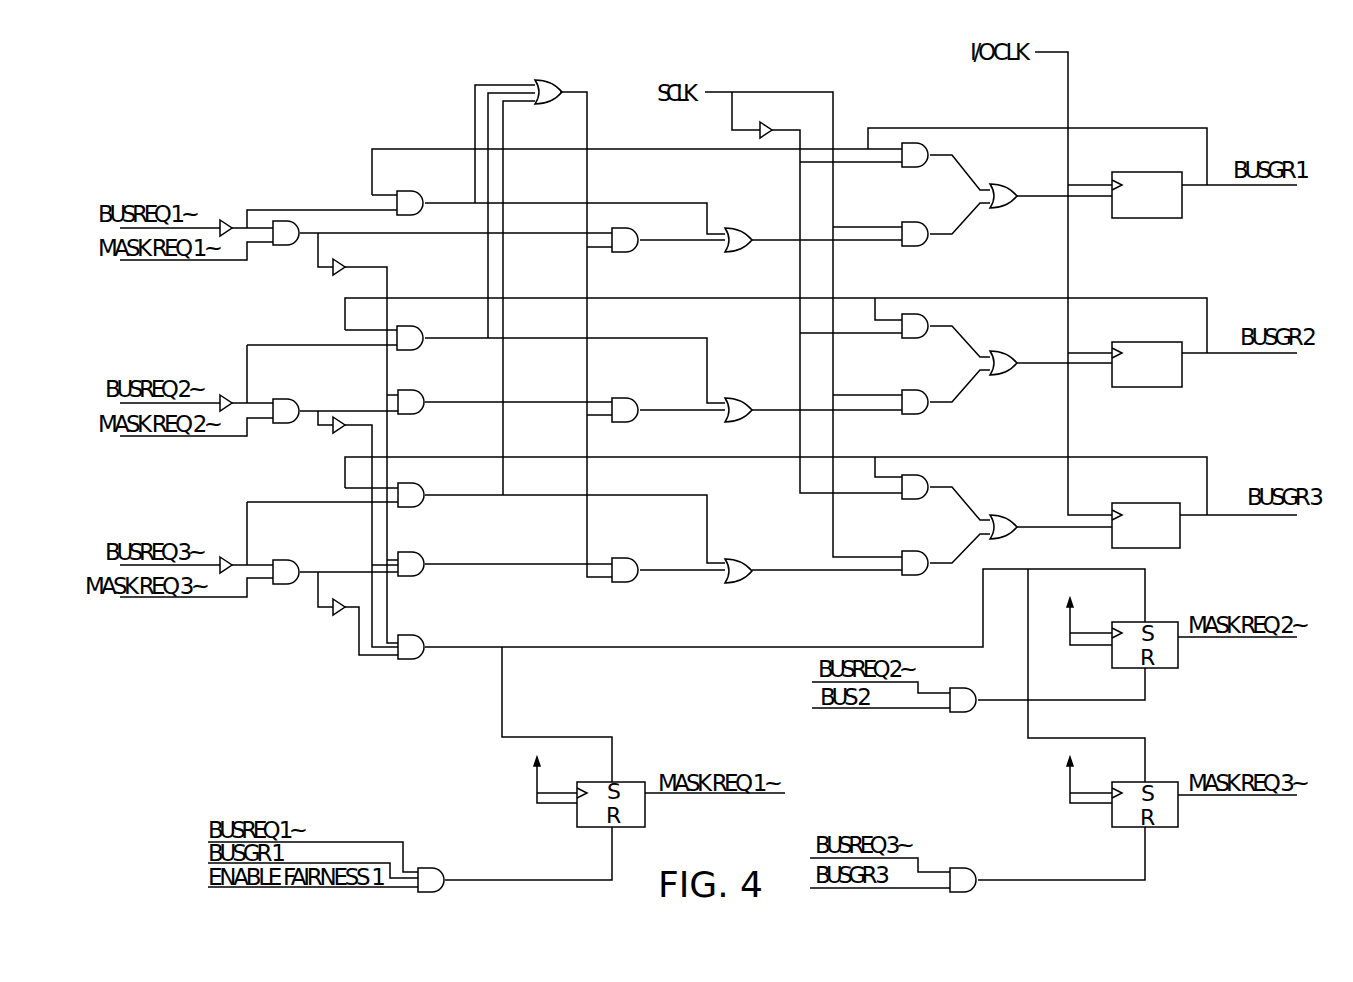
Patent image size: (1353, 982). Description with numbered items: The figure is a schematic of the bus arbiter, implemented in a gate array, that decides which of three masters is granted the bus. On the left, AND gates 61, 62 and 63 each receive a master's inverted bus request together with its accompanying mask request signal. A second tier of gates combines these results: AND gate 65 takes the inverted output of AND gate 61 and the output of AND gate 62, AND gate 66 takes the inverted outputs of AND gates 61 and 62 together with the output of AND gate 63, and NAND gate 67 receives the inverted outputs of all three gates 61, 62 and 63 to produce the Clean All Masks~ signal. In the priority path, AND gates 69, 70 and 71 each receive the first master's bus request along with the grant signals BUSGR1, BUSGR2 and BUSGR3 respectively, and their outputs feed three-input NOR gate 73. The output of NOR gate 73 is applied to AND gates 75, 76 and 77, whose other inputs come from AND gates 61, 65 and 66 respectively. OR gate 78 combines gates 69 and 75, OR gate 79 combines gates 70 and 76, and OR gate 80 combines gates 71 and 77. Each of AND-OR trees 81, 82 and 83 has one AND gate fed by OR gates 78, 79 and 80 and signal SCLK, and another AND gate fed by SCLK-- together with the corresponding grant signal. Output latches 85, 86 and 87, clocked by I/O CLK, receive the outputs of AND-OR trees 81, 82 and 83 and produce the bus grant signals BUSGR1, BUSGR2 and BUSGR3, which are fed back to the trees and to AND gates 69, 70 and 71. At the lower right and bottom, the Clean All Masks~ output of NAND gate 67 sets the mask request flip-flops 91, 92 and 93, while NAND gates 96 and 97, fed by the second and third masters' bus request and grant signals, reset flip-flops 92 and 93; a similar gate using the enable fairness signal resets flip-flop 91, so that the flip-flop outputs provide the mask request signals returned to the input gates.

The AND gate 61 is at (286, 247).
The AND gate 62 is at (286, 396).
The AND gate 63 is at (286, 560).
The AND gate 65 is at (411, 417).
The AND gate 66 is at (411, 579).
The NAND gate 67 is at (411, 663).
The AND gate 69 is at (410, 189).
The AND gate 70 is at (410, 326).
The AND gate 71 is at (411, 508).
The NOR gate 73 is at (557, 79).
The AND gate 75 is at (625, 255).
The AND gate 76 is at (625, 396).
The AND gate 77 is at (625, 556).
The OR gate 78 is at (738, 255).
The OR gate 79 is at (738, 396).
The OR gate 80 is at (738, 557).
The AND-OR tree 81 is at (959, 194).
The AND-OR tree 82 is at (959, 364).
The AND-OR tree 83 is at (960, 525).
The output latch 85 is at (1161, 205).
The output latch 86 is at (1161, 374).
The output latch 87 is at (1160, 532).
The mask request flip-flop 91 is at (621, 819).
The mask request flip-flop 92 is at (1160, 652).
The mask request flip-flop 93 is at (1160, 816).
The NAND gate 96 is at (963, 687).
The NAND gate 97 is at (963, 864).